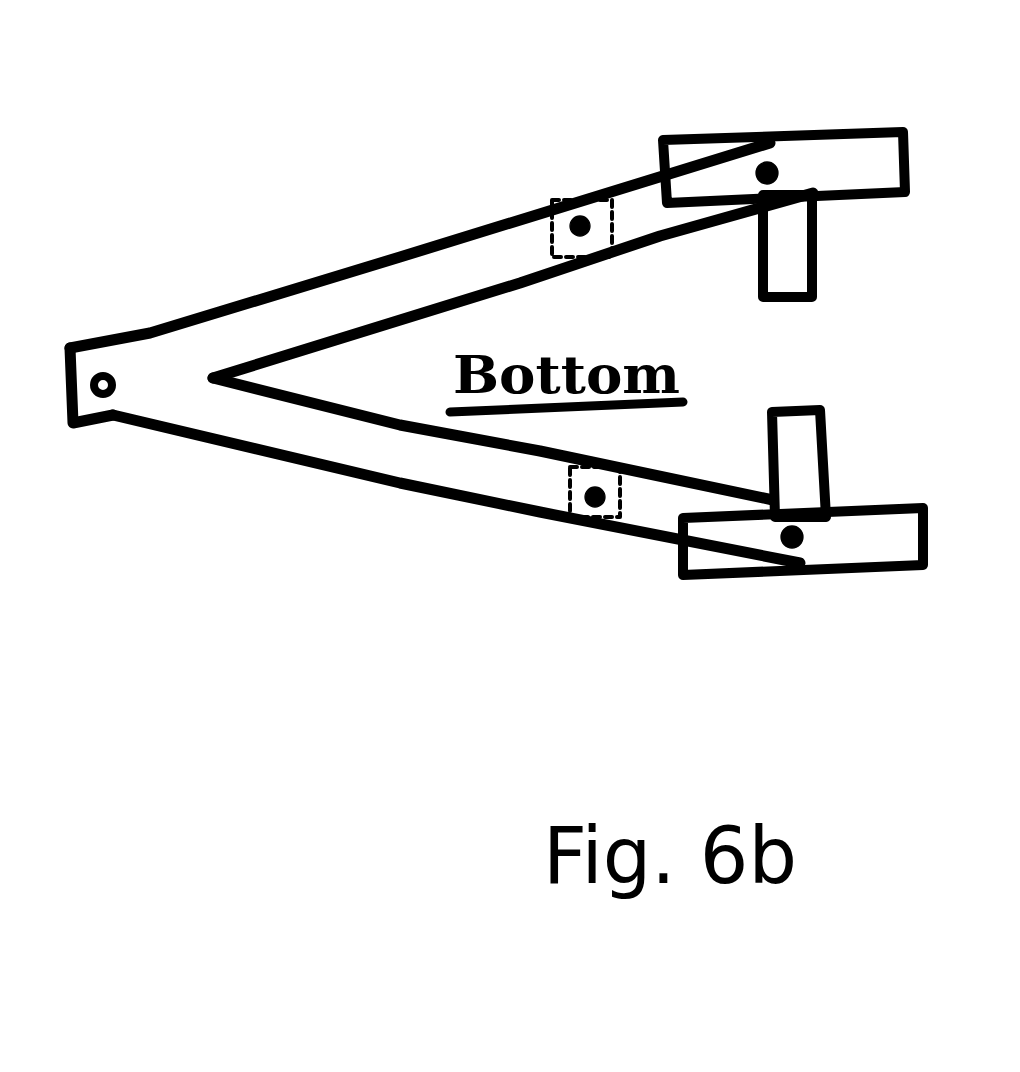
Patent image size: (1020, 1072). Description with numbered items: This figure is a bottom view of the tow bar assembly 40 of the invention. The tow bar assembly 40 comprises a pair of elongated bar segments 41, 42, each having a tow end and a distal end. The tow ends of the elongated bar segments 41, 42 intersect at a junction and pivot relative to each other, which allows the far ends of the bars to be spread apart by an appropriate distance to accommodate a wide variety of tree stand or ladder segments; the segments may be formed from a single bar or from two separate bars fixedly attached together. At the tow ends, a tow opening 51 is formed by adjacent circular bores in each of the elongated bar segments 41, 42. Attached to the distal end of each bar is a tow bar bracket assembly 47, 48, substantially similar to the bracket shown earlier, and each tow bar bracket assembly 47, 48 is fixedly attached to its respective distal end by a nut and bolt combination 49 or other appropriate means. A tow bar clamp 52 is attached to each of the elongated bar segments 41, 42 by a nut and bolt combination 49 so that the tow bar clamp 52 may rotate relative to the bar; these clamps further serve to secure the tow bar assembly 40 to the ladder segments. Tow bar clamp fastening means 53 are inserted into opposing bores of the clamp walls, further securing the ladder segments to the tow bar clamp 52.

The tow bar assembly 40 is at (278, 492).
The elongated bar segment 41 is at (393, 483).
The elongated bar segment 42 is at (327, 273).
The tow bar bracket assembly 47 is at (853, 552).
The tow bar bracket assembly 48 is at (825, 137).
The nut and bolt combination 49 is at (557, 203).
The tow opening 51 is at (108, 378).
The tow bar clamp 52 is at (593, 527).
The tow bar clamp fastening means 53 is at (583, 197).